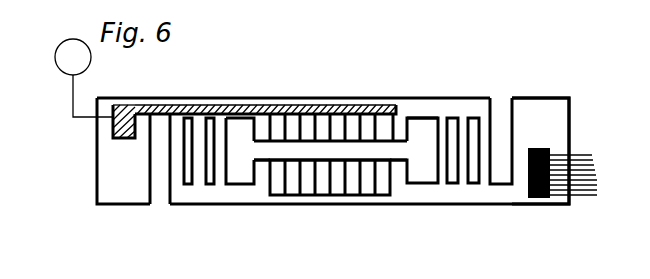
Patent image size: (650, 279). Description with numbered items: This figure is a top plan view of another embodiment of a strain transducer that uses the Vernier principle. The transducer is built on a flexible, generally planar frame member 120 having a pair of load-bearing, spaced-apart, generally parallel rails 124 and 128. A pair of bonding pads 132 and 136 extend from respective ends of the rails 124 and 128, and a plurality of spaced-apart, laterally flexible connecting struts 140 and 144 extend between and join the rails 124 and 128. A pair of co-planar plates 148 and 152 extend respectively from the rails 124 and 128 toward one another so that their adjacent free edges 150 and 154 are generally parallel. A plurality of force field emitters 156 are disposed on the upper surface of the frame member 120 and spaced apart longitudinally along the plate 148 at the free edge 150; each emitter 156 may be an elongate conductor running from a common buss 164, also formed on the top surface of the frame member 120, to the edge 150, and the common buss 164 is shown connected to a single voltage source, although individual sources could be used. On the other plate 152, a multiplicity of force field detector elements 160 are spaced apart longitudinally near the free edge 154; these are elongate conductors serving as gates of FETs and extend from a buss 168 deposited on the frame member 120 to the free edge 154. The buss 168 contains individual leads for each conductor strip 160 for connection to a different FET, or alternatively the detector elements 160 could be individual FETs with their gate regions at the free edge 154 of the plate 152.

The frame member 120 is at (402, 86).
The rail 124 is at (432, 114).
The rail 128 is at (235, 192).
The bonding pad 132 is at (124, 205).
The bonding pad 136 is at (553, 105).
The connecting strut 140 is at (209, 142).
The connecting strut 144 is at (483, 158).
The plate 148 is at (265, 124).
The free edge 150 is at (375, 132).
The plate 152 is at (262, 172).
The free edge 154 is at (398, 158).
The force field emitter 156 is at (323, 122).
The force field detector element 160 is at (358, 183).
The common buss 164 is at (217, 112).
The buss 168 is at (512, 200).